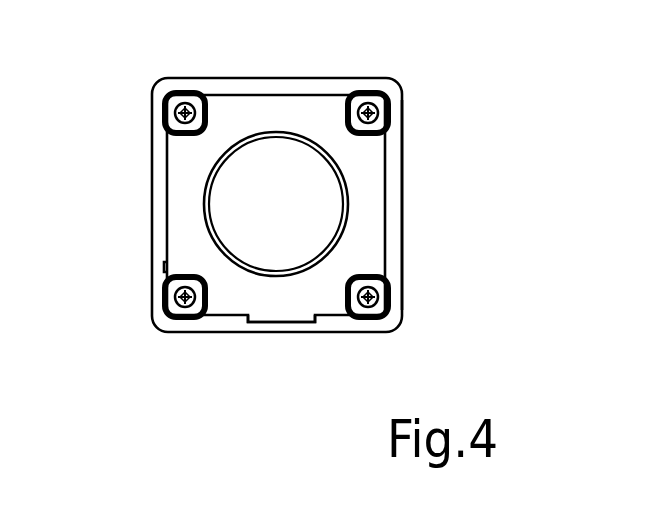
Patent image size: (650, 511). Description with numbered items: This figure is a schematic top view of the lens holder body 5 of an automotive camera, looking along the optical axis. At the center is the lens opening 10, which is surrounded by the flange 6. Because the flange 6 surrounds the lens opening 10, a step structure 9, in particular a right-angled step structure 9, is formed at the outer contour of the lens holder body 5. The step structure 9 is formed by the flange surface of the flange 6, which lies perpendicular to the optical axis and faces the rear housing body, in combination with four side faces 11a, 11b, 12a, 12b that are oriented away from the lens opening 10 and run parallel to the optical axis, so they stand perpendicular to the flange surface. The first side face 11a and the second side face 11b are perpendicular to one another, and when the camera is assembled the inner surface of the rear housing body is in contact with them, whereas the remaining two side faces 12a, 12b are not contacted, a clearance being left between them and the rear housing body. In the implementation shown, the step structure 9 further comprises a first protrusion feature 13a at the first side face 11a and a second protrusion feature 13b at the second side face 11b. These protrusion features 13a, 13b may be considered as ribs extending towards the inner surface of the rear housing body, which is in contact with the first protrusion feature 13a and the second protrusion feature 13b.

The lens holder body 5 is at (46, 166).
The flange 6 is at (407, 93).
The step structure 9 is at (415, 148).
The lens opening 10 is at (229, 206).
The first side face 11a is at (156, 177).
The second side face 11b is at (216, 327).
The third side face 12a is at (397, 212).
The fourth side face 12b is at (272, 84).
The first protrusion feature 13a is at (160, 274).
The second protrusion feature 13b is at (262, 318).